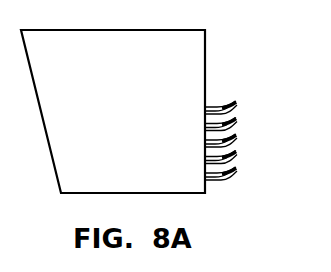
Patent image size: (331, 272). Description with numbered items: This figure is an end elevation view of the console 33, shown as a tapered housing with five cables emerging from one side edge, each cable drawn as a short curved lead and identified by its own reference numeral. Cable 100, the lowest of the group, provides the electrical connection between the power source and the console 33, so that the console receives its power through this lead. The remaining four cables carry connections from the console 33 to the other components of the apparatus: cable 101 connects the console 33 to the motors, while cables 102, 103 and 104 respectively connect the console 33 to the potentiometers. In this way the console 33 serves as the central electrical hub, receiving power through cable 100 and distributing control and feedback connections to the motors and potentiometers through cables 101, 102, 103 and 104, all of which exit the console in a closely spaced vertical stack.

The console 33 is at (120, 100).
The cable 100 is at (204, 175).
The cable 101 is at (204, 158).
The cable 102 is at (204, 142).
The cable 103 is at (204, 126).
The cable 104 is at (204, 110).